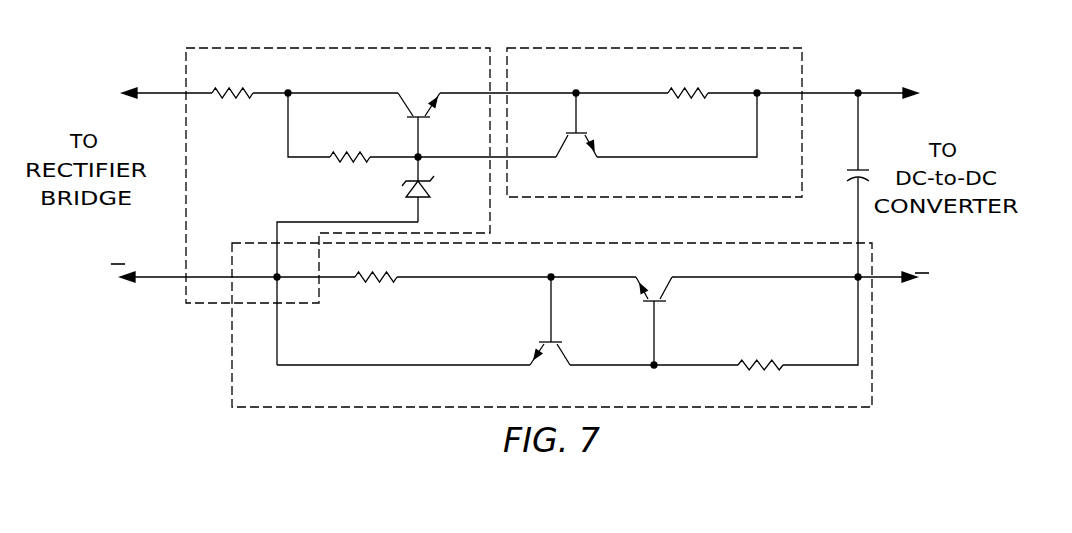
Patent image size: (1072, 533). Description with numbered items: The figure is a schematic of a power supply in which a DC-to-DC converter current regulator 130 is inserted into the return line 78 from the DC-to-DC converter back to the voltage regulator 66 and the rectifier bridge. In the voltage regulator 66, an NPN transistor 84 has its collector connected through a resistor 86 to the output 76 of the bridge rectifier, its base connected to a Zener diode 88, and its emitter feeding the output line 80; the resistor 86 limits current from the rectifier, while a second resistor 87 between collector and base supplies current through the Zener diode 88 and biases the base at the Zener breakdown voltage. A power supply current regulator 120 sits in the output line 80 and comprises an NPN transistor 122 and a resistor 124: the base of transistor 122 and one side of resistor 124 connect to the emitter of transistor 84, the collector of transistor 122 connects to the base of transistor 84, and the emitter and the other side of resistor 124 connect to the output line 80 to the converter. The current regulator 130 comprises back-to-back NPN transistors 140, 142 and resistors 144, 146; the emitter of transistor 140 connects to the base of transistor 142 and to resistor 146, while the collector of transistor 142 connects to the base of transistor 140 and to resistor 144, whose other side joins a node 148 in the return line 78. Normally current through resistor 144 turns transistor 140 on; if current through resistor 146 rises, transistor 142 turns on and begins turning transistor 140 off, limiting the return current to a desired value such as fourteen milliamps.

The voltage regulator 66 is at (338, 155).
The output of the bridge rectifier 76 is at (161, 66).
The return line 78 is at (193, 257).
The output line 80 is at (912, 72).
The NPN transistor 84 is at (399, 106).
The resistor 86 is at (194, 112).
The second resistor 87 is at (364, 136).
The Zener diode 88 is at (387, 189).
The power supply current regulator 120 is at (678, 106).
The NPN transistor 122 is at (601, 142).
The resistor 124 is at (660, 77).
The DC-to-DC converter current regulator 130 is at (554, 346).
The NPN transistor 140 is at (690, 309).
The NPN transistor 142 is at (507, 321).
The resistor 144 is at (782, 348).
The resistor 146 is at (345, 304).
The node 148 is at (905, 261).